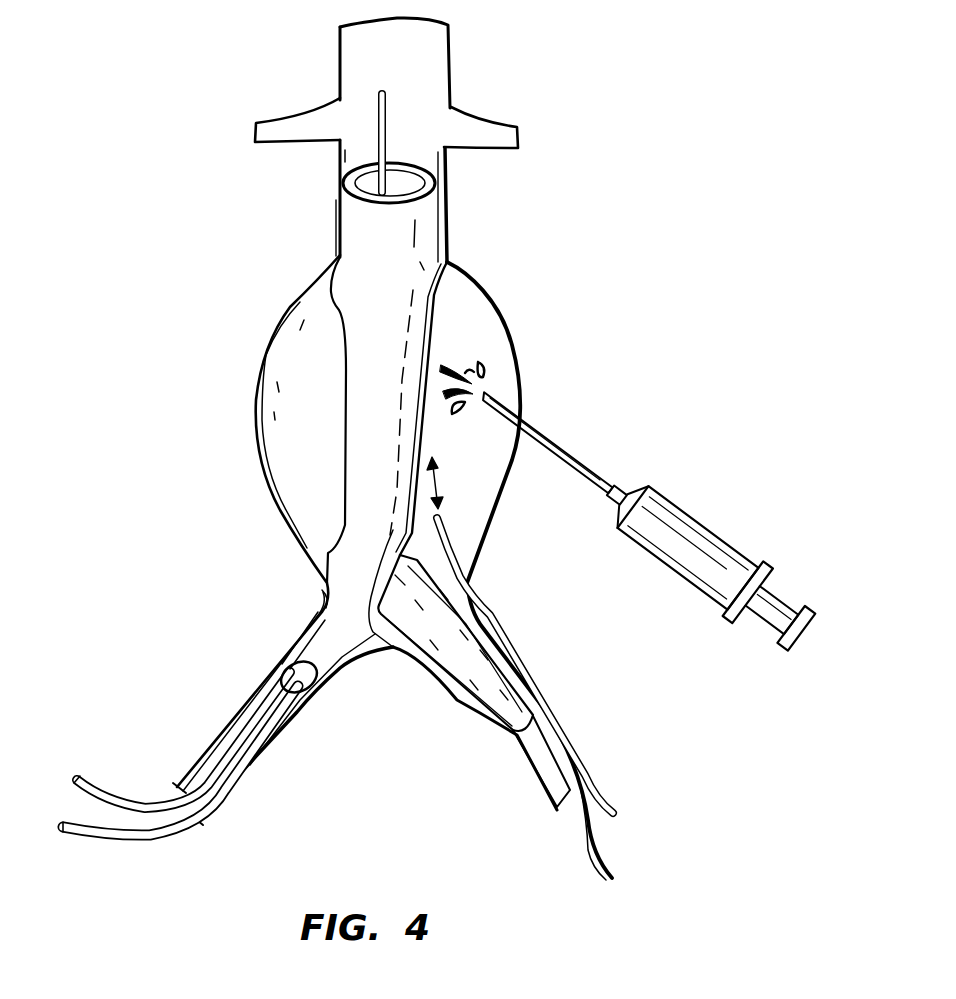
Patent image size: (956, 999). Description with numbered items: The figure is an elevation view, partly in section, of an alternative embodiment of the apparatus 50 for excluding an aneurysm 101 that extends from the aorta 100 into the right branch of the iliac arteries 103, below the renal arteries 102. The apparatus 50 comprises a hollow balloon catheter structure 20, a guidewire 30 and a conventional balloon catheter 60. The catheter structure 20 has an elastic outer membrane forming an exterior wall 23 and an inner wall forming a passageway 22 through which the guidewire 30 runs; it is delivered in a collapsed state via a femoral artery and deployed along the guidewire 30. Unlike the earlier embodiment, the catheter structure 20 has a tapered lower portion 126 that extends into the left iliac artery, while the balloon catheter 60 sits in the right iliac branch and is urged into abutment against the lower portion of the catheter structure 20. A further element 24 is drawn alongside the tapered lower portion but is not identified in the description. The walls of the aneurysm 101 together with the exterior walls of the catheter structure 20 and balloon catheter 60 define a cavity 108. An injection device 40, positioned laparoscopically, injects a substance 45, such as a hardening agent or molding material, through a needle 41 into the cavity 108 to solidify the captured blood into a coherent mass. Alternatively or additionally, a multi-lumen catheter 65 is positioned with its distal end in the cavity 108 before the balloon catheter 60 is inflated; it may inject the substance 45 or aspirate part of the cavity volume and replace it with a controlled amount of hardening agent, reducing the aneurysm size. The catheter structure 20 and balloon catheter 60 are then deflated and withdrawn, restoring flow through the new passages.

The aorta 100 is at (446, 57).
The renal arteries 102 is at (277, 120).
The aneurysm 101 is at (253, 398).
The cavity 108 is at (275, 473).
The apparatus 50 is at (194, 332).
The hollow balloon catheter structure 20 is at (326, 402).
The exterior wall 23 is at (350, 353).
The passageway 22 is at (412, 180).
The guidewire 30 is at (372, 90).
The catheter 24 is at (93, 781).
The iliac arteries 103 is at (295, 722).
The conventional balloon catheter 60 is at (412, 655).
The tapered lower portion 126 is at (270, 640).
The catheter 65 is at (445, 523).
The substance 45 is at (463, 368).
The needle 41 is at (582, 462).
The injection device 40 is at (710, 522).